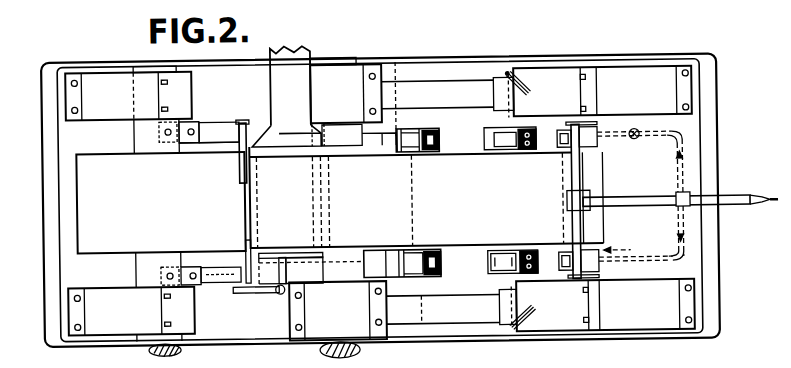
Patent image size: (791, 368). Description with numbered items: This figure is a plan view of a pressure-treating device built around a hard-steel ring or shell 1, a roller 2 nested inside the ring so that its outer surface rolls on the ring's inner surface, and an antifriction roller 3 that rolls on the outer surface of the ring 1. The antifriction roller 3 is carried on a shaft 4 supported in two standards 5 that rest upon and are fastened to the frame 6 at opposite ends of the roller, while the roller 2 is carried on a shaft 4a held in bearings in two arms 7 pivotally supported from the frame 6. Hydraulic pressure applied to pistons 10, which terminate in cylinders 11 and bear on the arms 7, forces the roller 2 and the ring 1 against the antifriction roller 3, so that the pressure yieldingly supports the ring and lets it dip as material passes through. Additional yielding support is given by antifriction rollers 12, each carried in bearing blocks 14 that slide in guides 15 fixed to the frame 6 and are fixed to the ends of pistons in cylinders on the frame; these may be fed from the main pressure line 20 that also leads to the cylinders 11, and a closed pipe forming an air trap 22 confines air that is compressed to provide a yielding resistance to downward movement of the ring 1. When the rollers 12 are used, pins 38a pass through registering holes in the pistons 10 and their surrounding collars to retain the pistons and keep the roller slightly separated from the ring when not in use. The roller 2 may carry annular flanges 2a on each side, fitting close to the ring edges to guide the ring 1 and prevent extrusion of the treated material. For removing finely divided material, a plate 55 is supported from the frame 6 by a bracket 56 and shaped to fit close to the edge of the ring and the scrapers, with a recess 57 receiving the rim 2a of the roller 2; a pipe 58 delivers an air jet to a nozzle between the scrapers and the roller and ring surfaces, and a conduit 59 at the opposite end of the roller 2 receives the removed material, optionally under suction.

The ring 1 is at (462, 241).
The roller 2 is at (412, 204).
The annular flange 2a is at (417, 152).
The antifriction roller 3 is at (88, 207).
The shaft 4 is at (143, 63).
The shaft 4a is at (353, 60).
The standard 5 is at (100, 111).
The frame 6 is at (68, 268).
The arm 7 is at (302, 351).
The piston 10 is at (465, 88).
The cylinder 11 is at (560, 68).
The antifriction roller 12 is at (507, 154).
The bearing block 14 is at (500, 130).
The guide 15 is at (510, 278).
The main pressure line 20 is at (735, 200).
The air trap 22 is at (637, 143).
The pin 38a is at (510, 74).
The plate 55 is at (300, 251).
The bracket 56 is at (227, 130).
The recess 57 is at (298, 262).
The pipe 58 is at (250, 293).
The conduit 59 is at (297, 81).